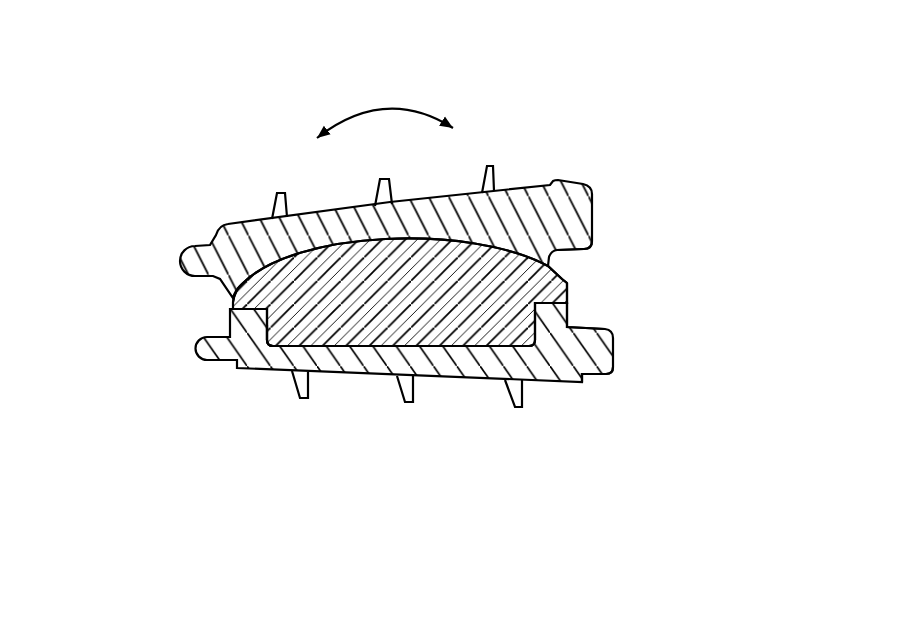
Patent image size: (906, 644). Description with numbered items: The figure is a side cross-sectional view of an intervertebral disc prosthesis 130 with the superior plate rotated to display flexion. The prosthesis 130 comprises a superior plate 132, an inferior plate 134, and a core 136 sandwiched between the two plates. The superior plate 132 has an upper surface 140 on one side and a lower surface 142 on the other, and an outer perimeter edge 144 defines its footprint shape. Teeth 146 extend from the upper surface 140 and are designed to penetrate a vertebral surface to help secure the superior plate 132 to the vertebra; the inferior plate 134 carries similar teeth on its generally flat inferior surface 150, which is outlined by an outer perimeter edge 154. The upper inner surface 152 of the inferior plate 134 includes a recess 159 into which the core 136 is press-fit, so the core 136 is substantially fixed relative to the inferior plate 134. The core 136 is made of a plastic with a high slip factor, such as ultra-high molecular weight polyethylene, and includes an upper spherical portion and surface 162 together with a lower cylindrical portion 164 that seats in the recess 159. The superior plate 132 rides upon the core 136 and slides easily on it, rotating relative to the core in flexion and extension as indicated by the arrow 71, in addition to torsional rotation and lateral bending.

The arrow 71 is at (382, 112).
The intervertebral disc prosthesis 130 is at (599, 132).
The superior plate 132 is at (572, 212).
The inferior plate 134 is at (593, 349).
The core 136 is at (546, 275).
The upper surface 140 is at (246, 221).
The lower surface 142 is at (273, 270).
The outer perimeter edge 144 is at (593, 243).
The teeth 146 is at (503, 177).
The inferior surface 150 is at (481, 389).
The upper inner surface 152 is at (548, 298).
The outer perimeter edge 154 is at (617, 375).
The recess 159 is at (298, 338).
The upper spherical portion and surface 162 is at (472, 240).
The lower cylindrical portion 164 is at (433, 330).